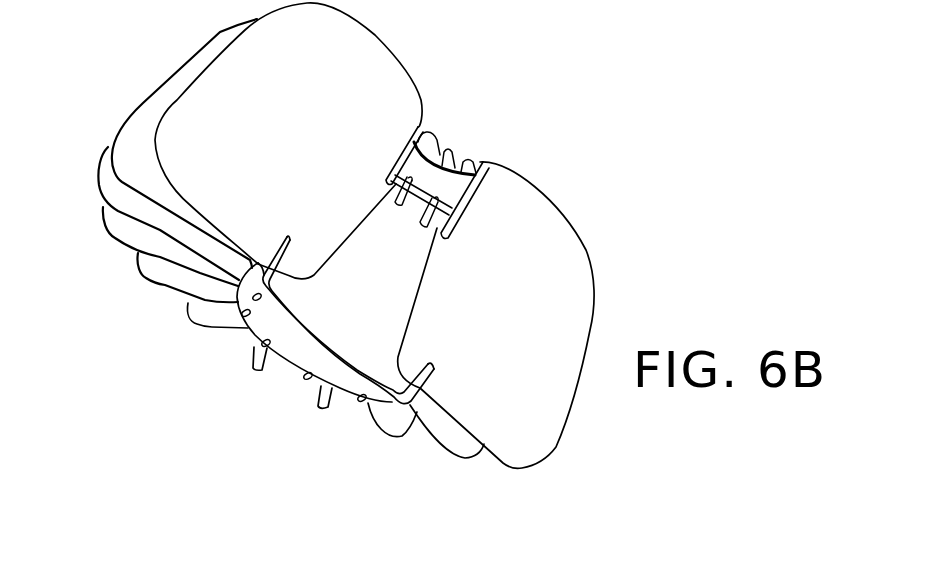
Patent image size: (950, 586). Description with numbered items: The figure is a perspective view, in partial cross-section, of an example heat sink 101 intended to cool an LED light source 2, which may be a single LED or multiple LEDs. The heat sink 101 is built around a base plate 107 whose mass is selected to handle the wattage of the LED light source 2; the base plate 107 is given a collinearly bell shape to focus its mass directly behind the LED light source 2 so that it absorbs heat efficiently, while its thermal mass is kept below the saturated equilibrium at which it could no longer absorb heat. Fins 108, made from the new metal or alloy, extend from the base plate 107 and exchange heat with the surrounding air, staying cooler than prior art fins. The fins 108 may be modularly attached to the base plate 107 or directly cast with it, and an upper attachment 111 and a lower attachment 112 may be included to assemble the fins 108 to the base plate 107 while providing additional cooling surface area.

The heat sink 101 is at (600, 143).
The fins 108 is at (197, 113).
The base plate 107 is at (332, 290).
The LED light source 2 is at (298, 336).
The upper attachment 111 is at (282, 383).
The lower attachment 112 is at (431, 151).